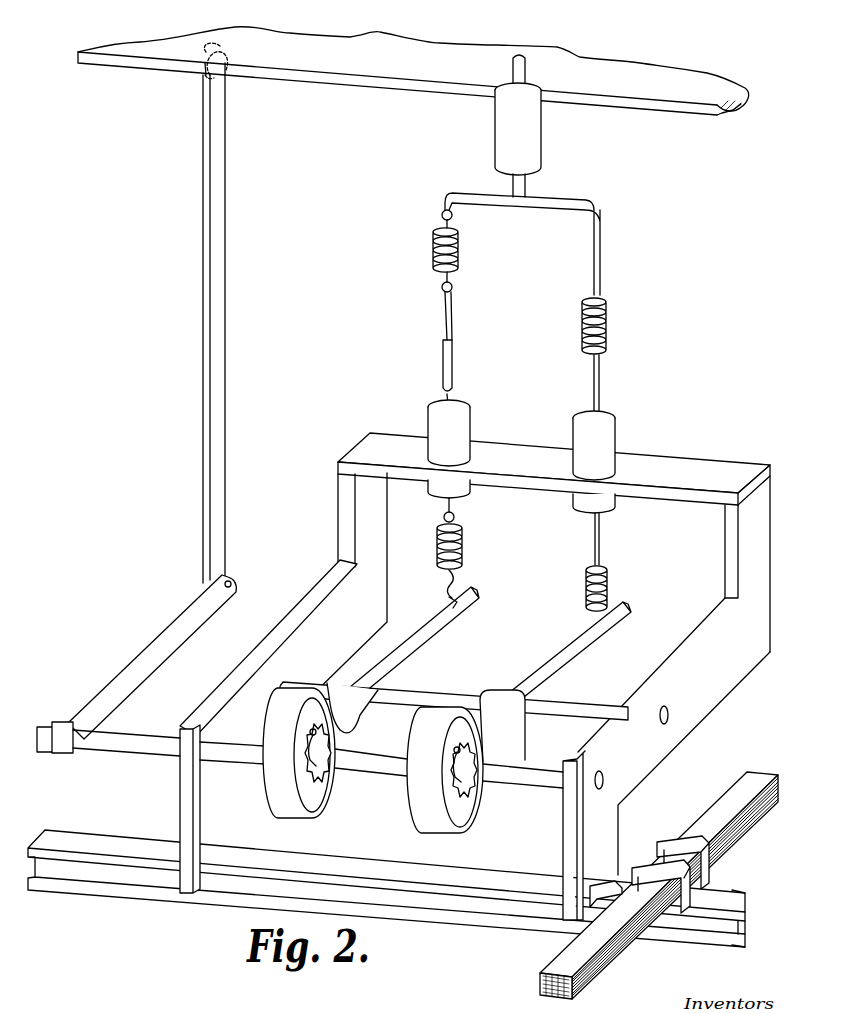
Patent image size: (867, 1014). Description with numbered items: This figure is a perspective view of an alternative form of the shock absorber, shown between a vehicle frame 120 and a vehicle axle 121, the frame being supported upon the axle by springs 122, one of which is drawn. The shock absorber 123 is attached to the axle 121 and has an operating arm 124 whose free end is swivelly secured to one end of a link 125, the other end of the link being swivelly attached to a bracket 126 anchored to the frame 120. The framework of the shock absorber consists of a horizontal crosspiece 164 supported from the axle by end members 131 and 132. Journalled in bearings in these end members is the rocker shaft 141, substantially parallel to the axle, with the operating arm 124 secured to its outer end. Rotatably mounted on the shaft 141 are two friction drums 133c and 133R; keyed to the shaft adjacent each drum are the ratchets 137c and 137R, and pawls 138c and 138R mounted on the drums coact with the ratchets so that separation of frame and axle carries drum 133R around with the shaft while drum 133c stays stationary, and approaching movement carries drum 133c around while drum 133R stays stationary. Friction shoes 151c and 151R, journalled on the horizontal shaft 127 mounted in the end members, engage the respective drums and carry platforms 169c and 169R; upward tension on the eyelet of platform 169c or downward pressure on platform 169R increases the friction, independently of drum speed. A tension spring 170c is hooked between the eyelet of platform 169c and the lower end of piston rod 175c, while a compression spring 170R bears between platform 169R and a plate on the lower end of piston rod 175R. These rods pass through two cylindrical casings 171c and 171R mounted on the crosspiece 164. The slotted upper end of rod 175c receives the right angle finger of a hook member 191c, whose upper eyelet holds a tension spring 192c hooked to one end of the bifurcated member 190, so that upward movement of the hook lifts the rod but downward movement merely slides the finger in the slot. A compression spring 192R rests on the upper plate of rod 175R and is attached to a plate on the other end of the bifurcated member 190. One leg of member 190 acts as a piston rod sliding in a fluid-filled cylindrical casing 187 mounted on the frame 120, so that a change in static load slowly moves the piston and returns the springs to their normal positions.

The frame 120 is at (648, 108).
The vehicle axle 121 is at (746, 936).
The spring 122 is at (728, 853).
The shock absorber 123 is at (693, 708).
The operating arm 124 is at (150, 666).
The link 125 is at (226, 296).
The bracket 126 is at (228, 58).
The horizontal shaft 127 is at (456, 676).
The end member 131 is at (276, 650).
The end member 132 is at (631, 767).
The friction drum 133c is at (313, 805).
The friction drum 133R is at (468, 817).
The ratchet 137c is at (324, 781).
The ratchet 137R is at (477, 790).
The pawl 138c is at (333, 731).
The pawl 138R is at (424, 722).
The rocker shaft 141 is at (150, 745).
The friction shoe 151c is at (284, 719).
The friction shoe 151R is at (422, 821).
The horizontal crosspiece 164 is at (690, 457).
The platform 169c is at (428, 627).
The platform 169R is at (562, 651).
The tension spring 170c is at (463, 546).
The compression spring 170R is at (609, 582).
The cylindrical casing 171c is at (470, 431).
The cylindrical casing 171R is at (616, 439).
The piston rod 175c is at (454, 378).
The piston rod 175R is at (600, 392).
The cylindrical casing 187 is at (542, 152).
The bifurcated member 190 is at (600, 224).
The hook member 191c is at (453, 322).
The tension spring 192c is at (459, 248).
The compression spring 192R is at (607, 328).